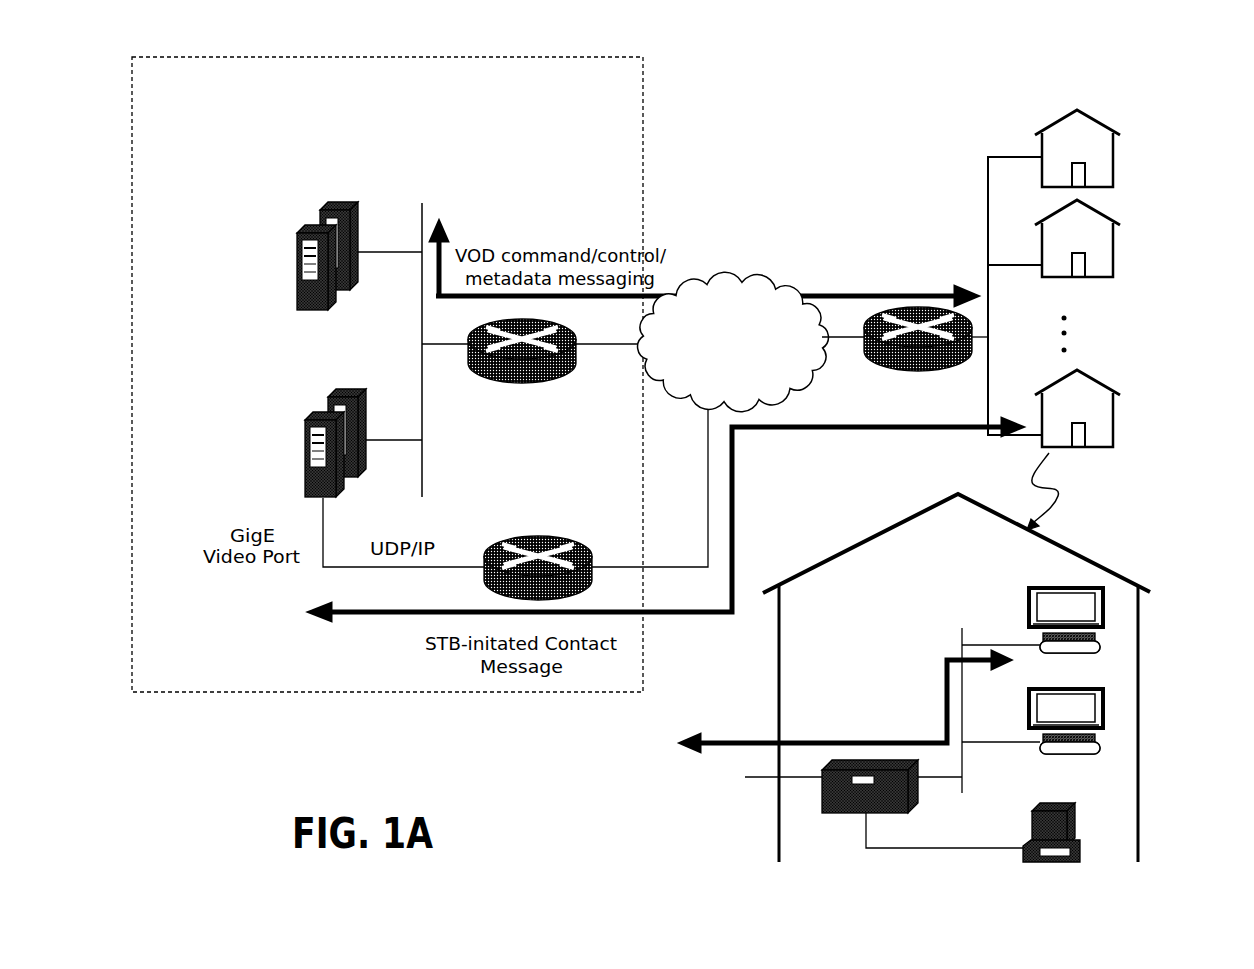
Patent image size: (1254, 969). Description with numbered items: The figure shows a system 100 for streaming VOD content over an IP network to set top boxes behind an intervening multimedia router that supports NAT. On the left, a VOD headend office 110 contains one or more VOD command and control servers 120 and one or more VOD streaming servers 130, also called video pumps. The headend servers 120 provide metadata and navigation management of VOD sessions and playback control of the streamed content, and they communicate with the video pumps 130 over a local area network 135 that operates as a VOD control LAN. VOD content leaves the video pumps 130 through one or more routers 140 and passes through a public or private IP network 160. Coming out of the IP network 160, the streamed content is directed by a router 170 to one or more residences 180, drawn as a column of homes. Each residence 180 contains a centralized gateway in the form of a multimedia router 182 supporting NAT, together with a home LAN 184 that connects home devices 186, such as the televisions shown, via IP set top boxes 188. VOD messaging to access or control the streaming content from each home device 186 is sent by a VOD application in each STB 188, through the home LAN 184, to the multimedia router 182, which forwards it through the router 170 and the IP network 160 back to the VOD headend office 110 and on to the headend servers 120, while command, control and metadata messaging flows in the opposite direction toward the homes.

The system 100 is at (962, 65).
The VOD headend office 110 is at (387, 374).
The VOD command and control servers 120 is at (277, 219).
The VOD streaming servers 130 is at (277, 416).
The local area network 135 is at (513, 316).
The router 140 is at (573, 459).
The IP network 160 is at (733, 342).
The router 170 is at (860, 303).
The residence 180 is at (1109, 295).
The multimedia router 182 is at (862, 760).
The LAN 184 is at (892, 683).
The home device 186 is at (1120, 653).
The set top box 188 is at (1138, 677).